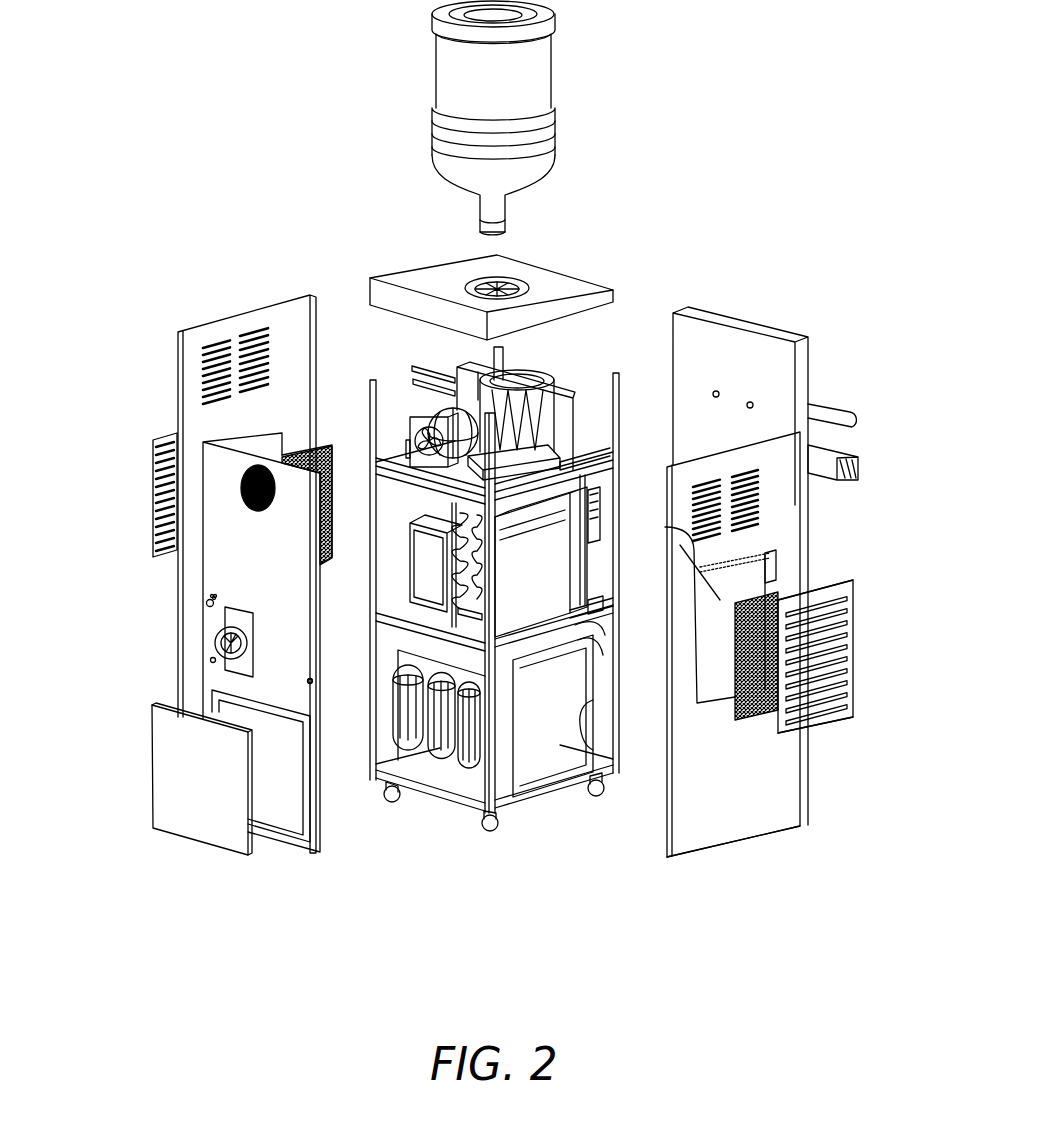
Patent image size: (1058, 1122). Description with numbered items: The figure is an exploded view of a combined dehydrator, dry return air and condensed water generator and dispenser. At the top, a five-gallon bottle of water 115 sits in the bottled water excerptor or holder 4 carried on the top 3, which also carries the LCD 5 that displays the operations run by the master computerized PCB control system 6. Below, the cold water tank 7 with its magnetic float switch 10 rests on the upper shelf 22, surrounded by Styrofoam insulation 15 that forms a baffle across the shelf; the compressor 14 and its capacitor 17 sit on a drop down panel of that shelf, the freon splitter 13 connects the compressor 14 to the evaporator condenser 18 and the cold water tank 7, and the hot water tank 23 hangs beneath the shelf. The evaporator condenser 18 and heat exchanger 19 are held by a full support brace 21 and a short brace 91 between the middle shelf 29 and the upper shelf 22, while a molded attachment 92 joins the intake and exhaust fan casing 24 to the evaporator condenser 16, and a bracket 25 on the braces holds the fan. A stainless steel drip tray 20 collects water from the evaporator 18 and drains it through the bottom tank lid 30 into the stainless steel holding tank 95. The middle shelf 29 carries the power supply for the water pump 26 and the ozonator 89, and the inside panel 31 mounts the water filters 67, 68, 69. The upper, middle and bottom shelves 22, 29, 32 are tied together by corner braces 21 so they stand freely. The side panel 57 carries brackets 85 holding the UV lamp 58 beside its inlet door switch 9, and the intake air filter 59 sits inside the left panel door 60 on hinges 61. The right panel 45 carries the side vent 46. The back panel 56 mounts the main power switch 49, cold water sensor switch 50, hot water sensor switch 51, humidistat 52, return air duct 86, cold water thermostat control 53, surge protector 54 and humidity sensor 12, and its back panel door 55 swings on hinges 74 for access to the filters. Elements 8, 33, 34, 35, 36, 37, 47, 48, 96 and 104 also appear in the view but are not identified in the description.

The bottle of water 115 is at (555, 74).
The top 3 is at (506, 276).
The bottled water excerptor 4 is at (512, 291).
The LCD 5 is at (413, 369).
The master computerized PCB control system 6 is at (412, 382).
The cold water tank 7 is at (557, 380).
The fan frame 8 is at (412, 432).
The UV lamp inlet door off on switch 9 is at (665, 527).
The magnetic float switch 10 is at (512, 376).
The humidity sensor 12 is at (321, 686).
The freon splitter 13 is at (447, 470).
The compressor 14 is at (435, 412).
The Styrofoam insulation 15 is at (553, 378).
The evaporator condenser 16 is at (552, 568).
The capacitor 17 is at (410, 450).
The evaporator condenser 18 is at (580, 560).
The heat exchanger 19 is at (452, 567).
The stainless steel drip tray 20 is at (580, 614).
The corner braces 21 is at (618, 378).
The upper shelf 22 is at (393, 482).
The hot water tank 23 is at (607, 468).
The intake and exhaust fan casing 24 is at (455, 550).
The bracket 25 is at (425, 535).
The power supply for the water pump 26 is at (388, 618).
The middle shelf 29 is at (582, 622).
The bottom tank lid 30 is at (583, 637).
The inside panel holding water filters 31 is at (410, 656).
The bottom shelf 32 is at (617, 770).
The caster wheel 33 is at (396, 802).
The side panel 34 is at (760, 562).
The rear panel 35 is at (745, 322).
The bracket 36 is at (845, 414).
The bracket 37 is at (848, 455).
The right panel 45 is at (243, 312).
The side vent 46 is at (168, 437).
The filter screen 47 is at (297, 445).
The front panel 48 is at (303, 624).
The main power off/on switch 49 is at (212, 595).
The cold water sensor off/on switch 50 is at (215, 595).
The hot water sensor switch 51 is at (214, 597).
The humidistat 52 is at (205, 605).
The cold water thermostat control 53 is at (216, 640).
The surge protector 54 is at (210, 662).
The back panel door 55 is at (197, 843).
The back panel 56 is at (313, 820).
The side panel 57 is at (767, 838).
The UV lamp 58 is at (793, 573).
The intake air filter 59 is at (757, 720).
The left panel door 60 is at (815, 726).
The hinges 61 is at (153, 458).
The water filter 67 is at (405, 705).
The water filter 68 is at (440, 722).
The water filter 69 is at (470, 728).
The hinges 74 is at (150, 725).
The brackets 85 is at (750, 523).
The return air duct 86 is at (250, 648).
The ozonator 89 is at (595, 607).
The short brace 91 is at (593, 517).
The molded attachment 92 is at (455, 517).
The stainless steel holding tank 95 is at (587, 725).
The panel cutout 96 is at (570, 703).
The grille edge 104 is at (855, 583).